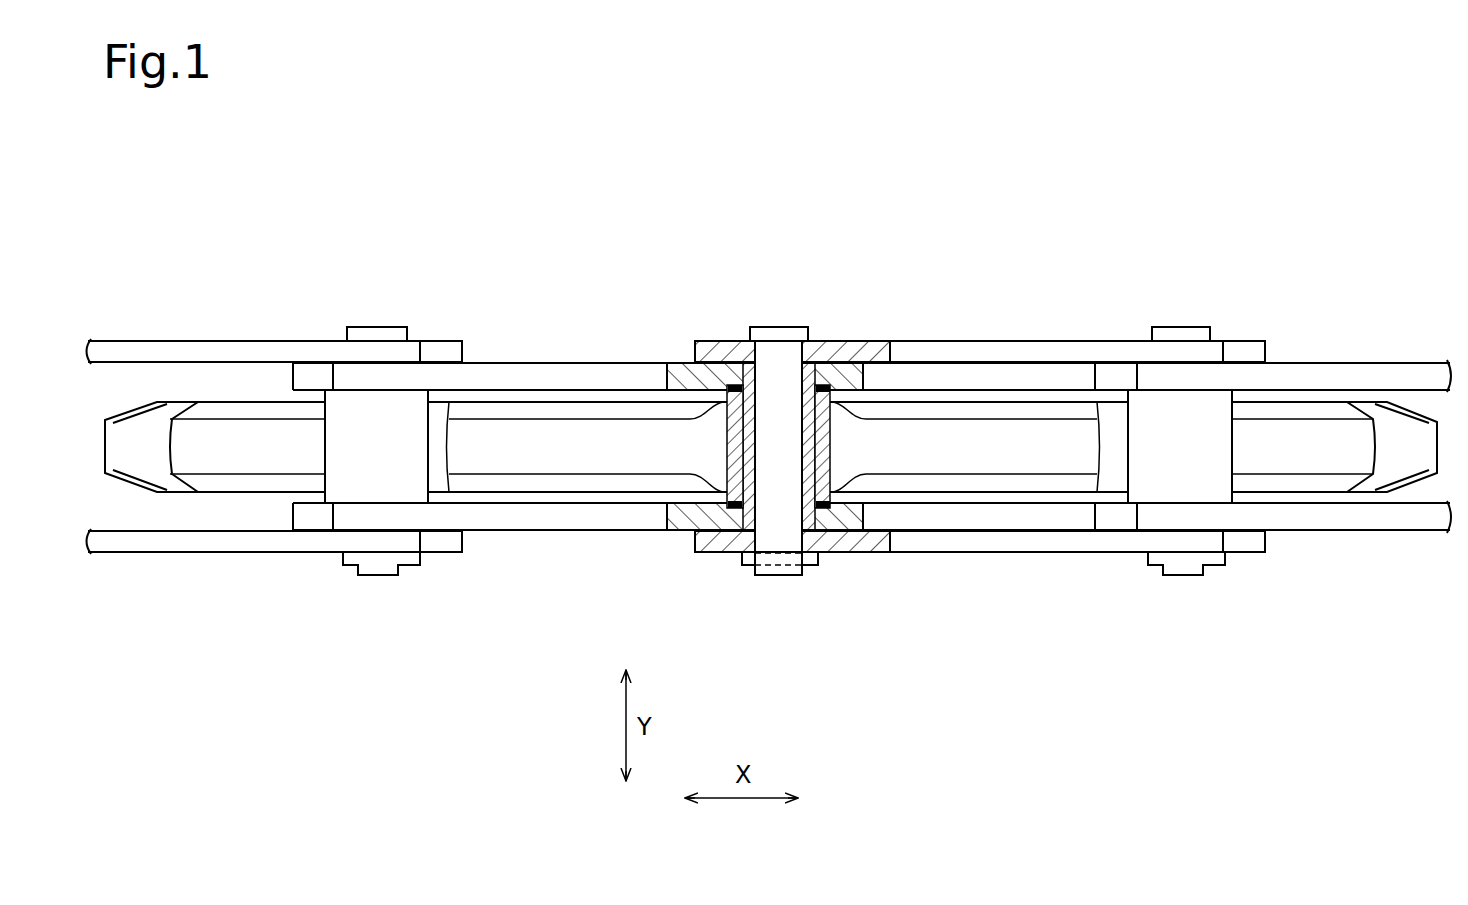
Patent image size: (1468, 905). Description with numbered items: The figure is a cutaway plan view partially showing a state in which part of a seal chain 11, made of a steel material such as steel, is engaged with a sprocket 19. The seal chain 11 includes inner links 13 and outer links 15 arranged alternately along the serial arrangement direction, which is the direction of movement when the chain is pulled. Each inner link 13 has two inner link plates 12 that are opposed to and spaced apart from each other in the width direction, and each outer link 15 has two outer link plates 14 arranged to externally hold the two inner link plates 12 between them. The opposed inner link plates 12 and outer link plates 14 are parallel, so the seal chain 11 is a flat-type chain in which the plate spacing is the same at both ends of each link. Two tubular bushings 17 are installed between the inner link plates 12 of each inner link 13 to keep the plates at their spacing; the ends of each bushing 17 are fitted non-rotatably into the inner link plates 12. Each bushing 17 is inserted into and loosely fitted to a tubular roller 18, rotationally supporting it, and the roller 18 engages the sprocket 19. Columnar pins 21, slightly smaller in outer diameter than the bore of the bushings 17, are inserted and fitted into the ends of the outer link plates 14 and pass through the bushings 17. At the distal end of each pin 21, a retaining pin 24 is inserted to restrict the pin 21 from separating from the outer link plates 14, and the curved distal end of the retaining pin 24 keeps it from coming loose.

The seal chain 11 is at (1172, 136).
The inner link plate 12 is at (587, 363).
The inner link 13 is at (532, 361).
The outer link plate 14 is at (230, 341).
The outer link 15 is at (175, 340).
The bushing 17 is at (740, 447).
The roller 18 is at (325, 437).
The sprocket 19 is at (958, 394).
The pin 21 is at (375, 327).
The retaining pin 24 is at (407, 566).